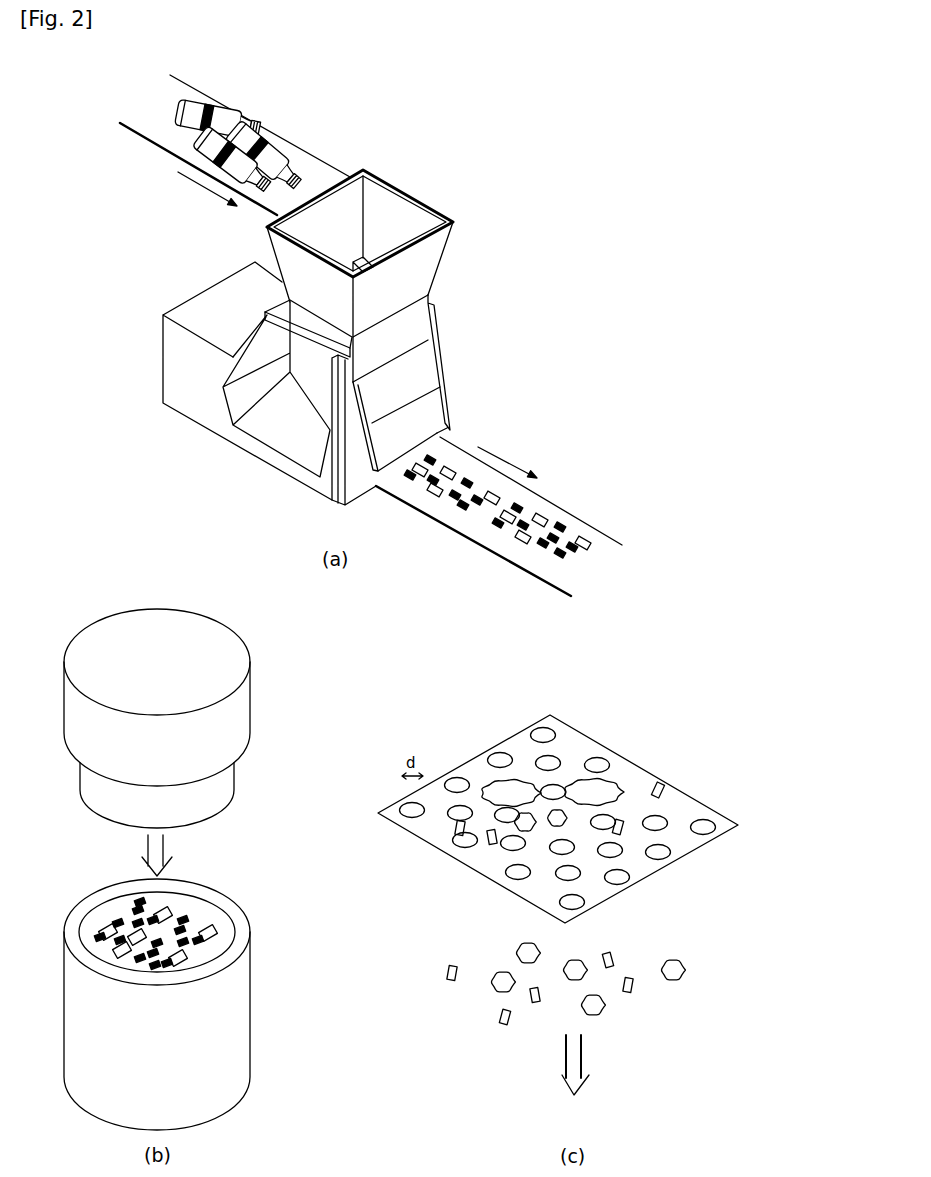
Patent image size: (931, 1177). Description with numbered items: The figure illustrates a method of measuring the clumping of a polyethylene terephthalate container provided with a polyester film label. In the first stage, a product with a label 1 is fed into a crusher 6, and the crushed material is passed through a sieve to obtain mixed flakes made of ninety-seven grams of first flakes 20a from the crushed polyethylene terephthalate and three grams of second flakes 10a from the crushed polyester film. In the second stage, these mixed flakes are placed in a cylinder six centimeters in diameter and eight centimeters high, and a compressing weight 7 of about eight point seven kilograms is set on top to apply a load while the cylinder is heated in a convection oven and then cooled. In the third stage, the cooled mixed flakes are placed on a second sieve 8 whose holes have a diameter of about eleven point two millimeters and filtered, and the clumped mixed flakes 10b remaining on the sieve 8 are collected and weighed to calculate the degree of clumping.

The product with a label 1 is at (275, 157).
The crusher 6 is at (407, 200).
The compressing weight 7 is at (249, 705).
The sieve 8 is at (698, 802).
The second flakes 10a is at (530, 504).
The clumped mixed flakes 10b is at (612, 786).
The first flakes 20a is at (583, 538).